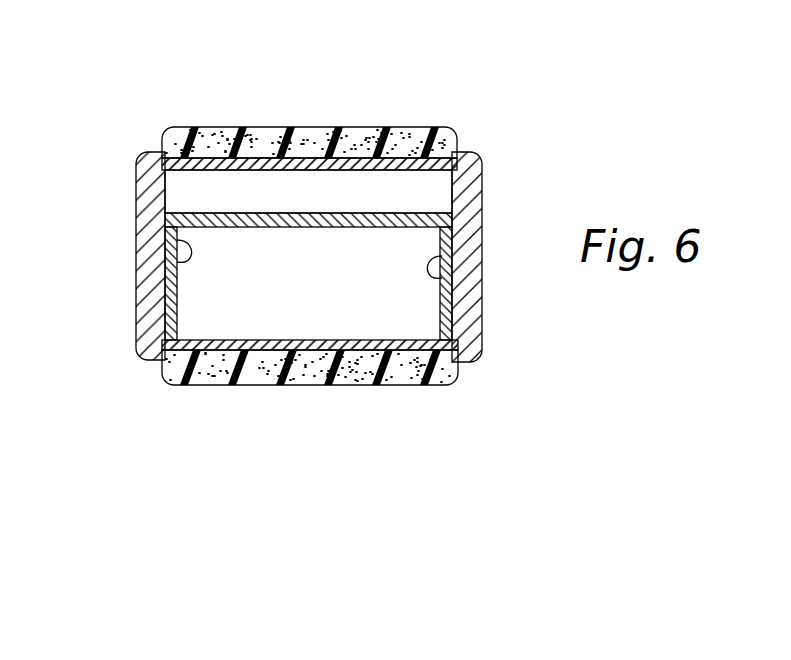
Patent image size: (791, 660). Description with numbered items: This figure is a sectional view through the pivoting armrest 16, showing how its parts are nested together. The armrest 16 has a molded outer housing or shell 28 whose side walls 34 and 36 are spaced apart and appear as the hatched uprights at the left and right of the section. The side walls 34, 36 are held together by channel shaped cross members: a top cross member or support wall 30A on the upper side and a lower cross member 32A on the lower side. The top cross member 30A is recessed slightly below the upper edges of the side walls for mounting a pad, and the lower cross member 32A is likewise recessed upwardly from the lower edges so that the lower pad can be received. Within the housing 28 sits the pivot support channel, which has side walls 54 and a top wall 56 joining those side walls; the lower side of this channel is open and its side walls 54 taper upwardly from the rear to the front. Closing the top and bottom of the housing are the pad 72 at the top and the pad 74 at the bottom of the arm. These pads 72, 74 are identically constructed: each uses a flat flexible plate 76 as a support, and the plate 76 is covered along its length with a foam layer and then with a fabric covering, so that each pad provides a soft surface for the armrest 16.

The pivoting armrest 16 is at (165, 96).
The outer housing 28 is at (137, 322).
The top cross member 30A is at (364, 188).
The lower cross member 32A is at (316, 338).
The side wall 34 is at (465, 197).
The side wall 36 is at (137, 190).
The side wall of pivot support channel 54 is at (178, 257).
The top wall 56 is at (236, 218).
The pad 72 is at (270, 126).
The pad 74 is at (250, 392).
The flat flexible plate 76 is at (204, 162).